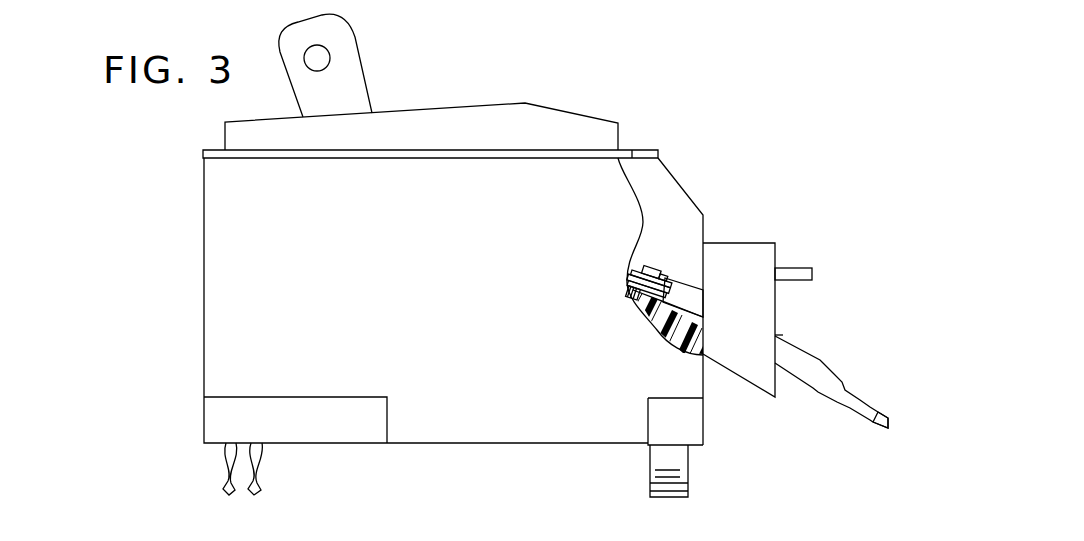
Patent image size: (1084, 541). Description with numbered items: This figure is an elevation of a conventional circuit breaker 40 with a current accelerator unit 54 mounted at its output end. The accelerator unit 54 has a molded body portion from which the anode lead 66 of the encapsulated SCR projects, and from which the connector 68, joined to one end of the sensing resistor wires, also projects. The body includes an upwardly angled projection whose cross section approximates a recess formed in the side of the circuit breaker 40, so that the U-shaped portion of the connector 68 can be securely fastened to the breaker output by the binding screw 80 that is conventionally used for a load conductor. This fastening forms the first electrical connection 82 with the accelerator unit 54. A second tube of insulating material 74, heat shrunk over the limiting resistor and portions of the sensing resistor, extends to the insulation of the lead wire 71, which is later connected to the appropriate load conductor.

The circuit breaker 40 is at (570, 113).
The first electrical connection 82 is at (647, 236).
The binding screw 80 is at (674, 270).
The connector 68 is at (633, 277).
The current accelerator unit 54 is at (750, 243).
The anode lead 66 is at (812, 274).
The second tube of insulating material 74 is at (820, 368).
The insulated lead wire 71 is at (873, 421).